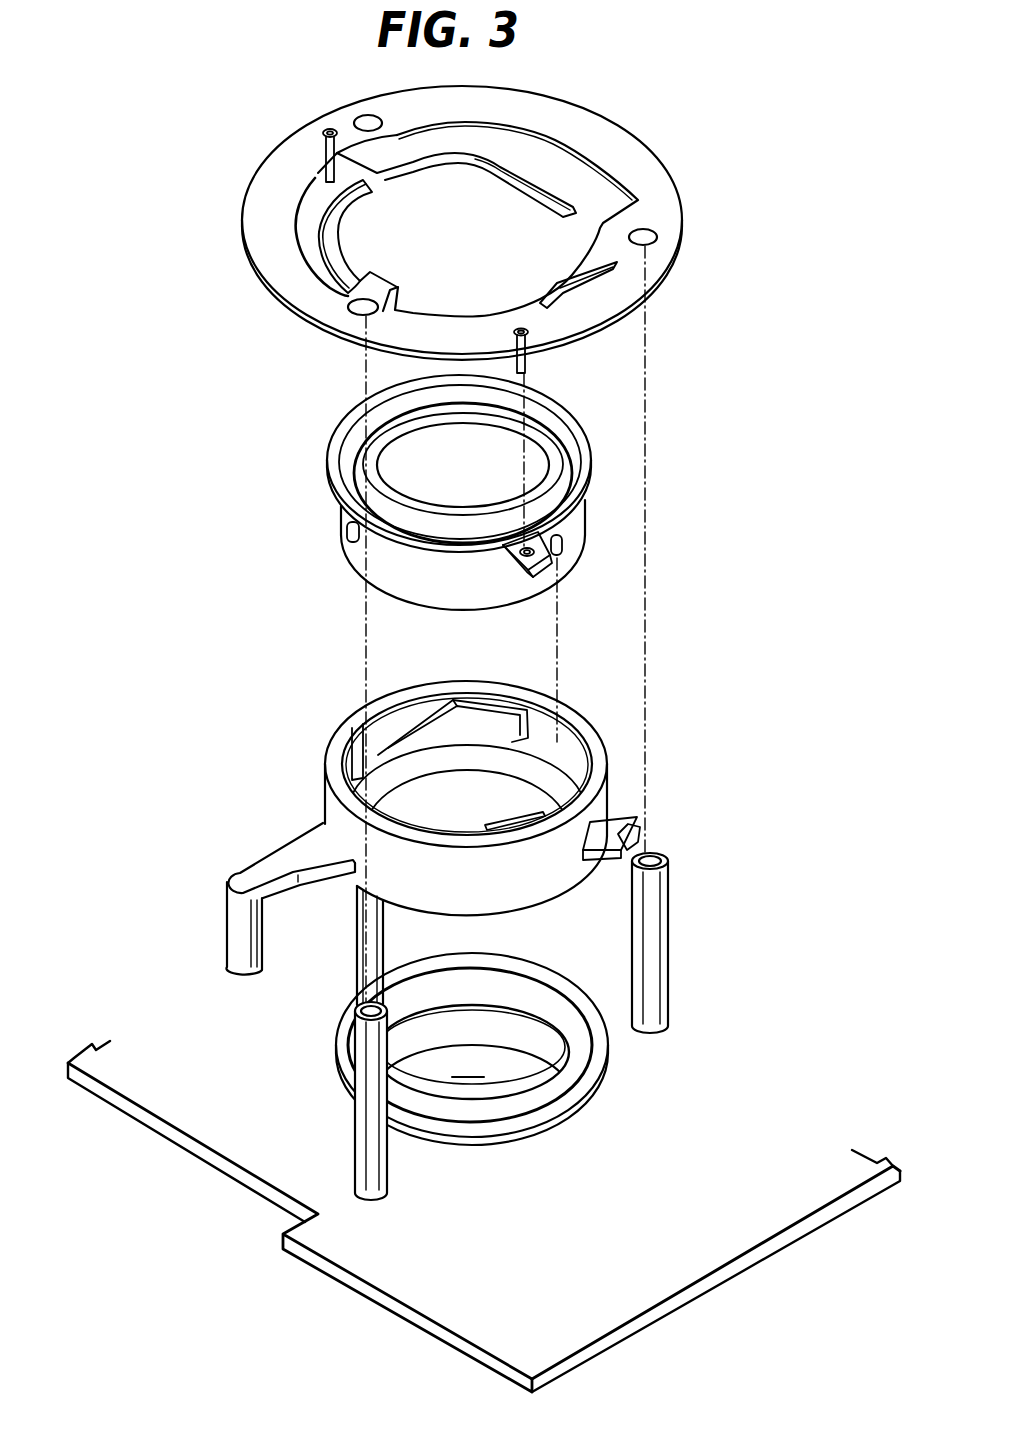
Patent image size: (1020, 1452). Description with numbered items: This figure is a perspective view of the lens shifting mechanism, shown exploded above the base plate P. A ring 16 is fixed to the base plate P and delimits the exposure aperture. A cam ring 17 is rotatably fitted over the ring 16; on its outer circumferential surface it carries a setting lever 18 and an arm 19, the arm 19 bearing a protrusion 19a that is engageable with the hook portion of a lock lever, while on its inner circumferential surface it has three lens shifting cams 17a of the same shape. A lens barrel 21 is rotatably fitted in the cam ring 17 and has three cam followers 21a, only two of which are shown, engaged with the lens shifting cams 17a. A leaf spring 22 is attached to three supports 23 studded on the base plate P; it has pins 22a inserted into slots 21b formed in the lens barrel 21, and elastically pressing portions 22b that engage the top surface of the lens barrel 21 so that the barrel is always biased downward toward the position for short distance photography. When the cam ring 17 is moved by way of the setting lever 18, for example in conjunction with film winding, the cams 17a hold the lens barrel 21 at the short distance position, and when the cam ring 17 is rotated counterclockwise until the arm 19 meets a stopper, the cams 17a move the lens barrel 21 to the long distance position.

The ring 16 is at (547, 1090).
The cam ring 17 is at (605, 792).
The lens shifting cams 17a is at (440, 707).
The setting lever 18 is at (263, 867).
The arm 19 is at (598, 862).
The protrusion 19a is at (630, 822).
The lens barrel 21 is at (597, 460).
The cam followers 21a is at (345, 530).
The slots 21b is at (503, 557).
The leaf spring 22 is at (628, 165).
The pins 22a is at (327, 162).
The elastically pressing portions 22b is at (512, 167).
The supports 23 is at (655, 912).
The base plate P is at (627, 1322).